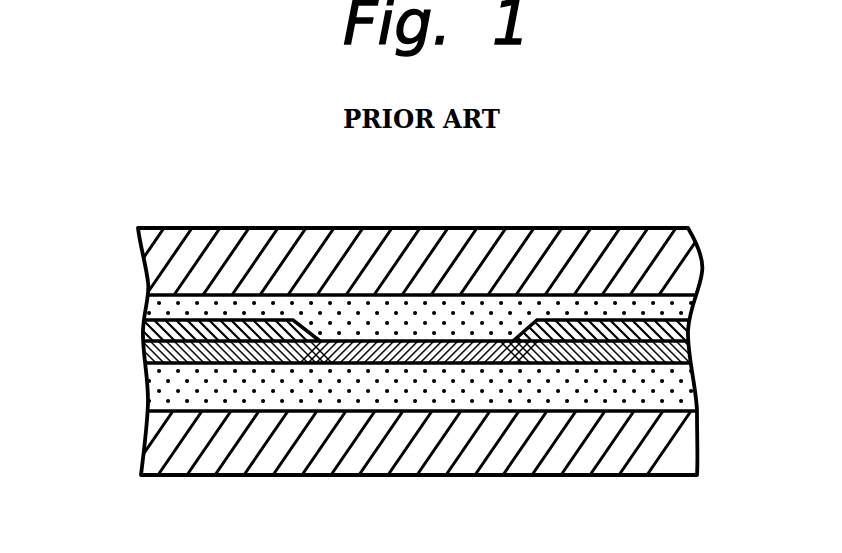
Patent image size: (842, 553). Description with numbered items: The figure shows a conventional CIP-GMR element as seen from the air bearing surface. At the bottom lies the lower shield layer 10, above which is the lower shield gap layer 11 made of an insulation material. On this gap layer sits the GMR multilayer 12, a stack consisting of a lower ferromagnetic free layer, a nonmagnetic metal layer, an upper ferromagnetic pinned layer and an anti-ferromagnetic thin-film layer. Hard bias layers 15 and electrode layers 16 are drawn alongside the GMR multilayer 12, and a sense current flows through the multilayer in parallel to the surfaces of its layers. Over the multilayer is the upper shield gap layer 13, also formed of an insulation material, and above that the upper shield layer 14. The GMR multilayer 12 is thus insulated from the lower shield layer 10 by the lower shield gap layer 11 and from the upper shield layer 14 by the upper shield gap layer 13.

The lower shield layer 10 is at (698, 447).
The lower shield gap layer 11 is at (695, 396).
The GMR multilayer 12 is at (470, 363).
The upper shield gap layer 13 is at (676, 303).
The upper shield layer 14 is at (676, 240).
The hard bias layers 15 is at (696, 352).
The electrode layers 16 is at (690, 334).